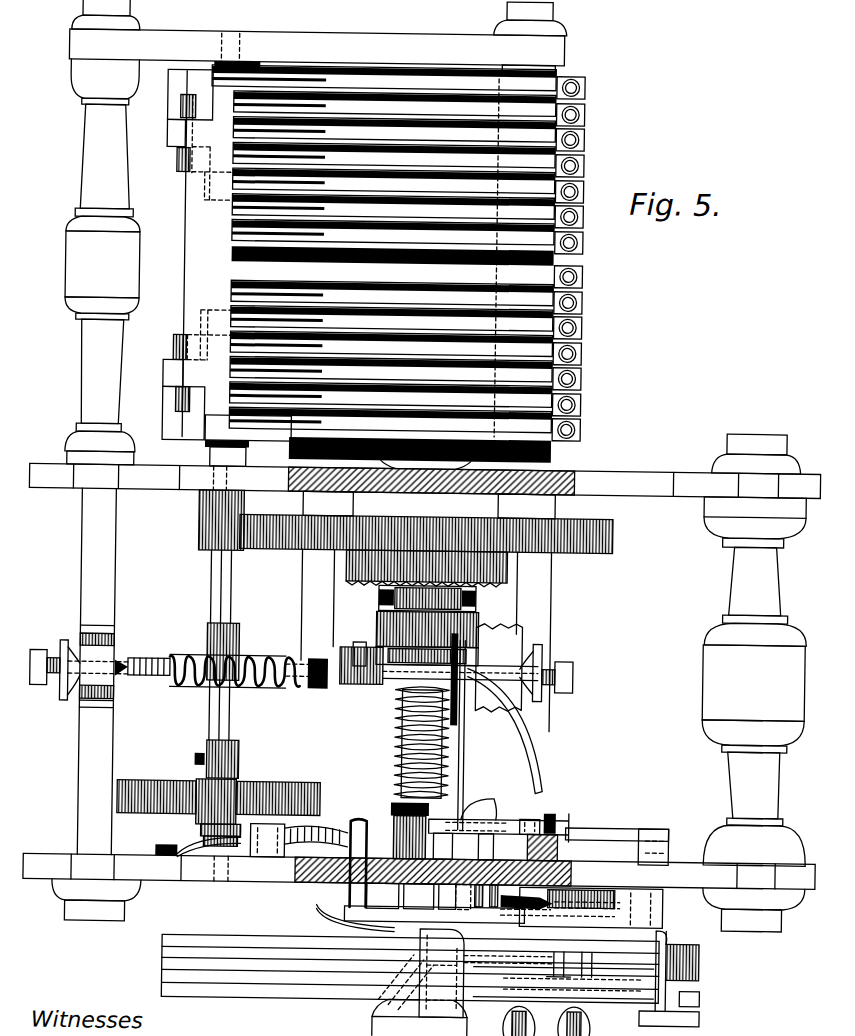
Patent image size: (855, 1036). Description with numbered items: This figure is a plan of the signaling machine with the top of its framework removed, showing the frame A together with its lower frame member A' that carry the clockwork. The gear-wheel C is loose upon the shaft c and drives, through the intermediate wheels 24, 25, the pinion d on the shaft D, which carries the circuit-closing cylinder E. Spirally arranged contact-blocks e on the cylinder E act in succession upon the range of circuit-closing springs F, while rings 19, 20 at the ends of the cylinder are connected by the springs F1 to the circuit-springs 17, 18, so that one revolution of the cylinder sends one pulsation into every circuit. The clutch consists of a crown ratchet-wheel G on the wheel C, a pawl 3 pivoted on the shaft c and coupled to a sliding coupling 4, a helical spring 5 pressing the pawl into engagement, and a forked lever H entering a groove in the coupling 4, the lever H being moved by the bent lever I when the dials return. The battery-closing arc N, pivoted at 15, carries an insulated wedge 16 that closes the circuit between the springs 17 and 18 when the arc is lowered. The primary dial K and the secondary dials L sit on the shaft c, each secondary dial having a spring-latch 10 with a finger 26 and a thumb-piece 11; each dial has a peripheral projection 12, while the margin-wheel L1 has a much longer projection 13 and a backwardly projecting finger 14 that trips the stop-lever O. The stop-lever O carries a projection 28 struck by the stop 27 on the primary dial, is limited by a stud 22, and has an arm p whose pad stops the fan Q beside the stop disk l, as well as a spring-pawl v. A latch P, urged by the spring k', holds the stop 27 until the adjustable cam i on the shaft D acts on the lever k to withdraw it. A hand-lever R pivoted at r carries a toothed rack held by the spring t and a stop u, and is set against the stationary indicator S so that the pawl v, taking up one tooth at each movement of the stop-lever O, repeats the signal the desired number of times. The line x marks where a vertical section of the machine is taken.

The frame A is at (424, 472).
The lower frame plate A' is at (419, 884).
The circuit-closing cylinder E is at (208, 254).
The contact-blocks e is at (172, 253).
The ring 19 is at (190, 108).
The ring 20 is at (227, 413).
The circuit-closing springs F is at (381, 251).
The springs F1 is at (422, 273).
The gear-wheel C is at (441, 534).
The crown ratchet-wheel G is at (508, 569).
The pawl 3 is at (470, 608).
The shaft c is at (398, 590).
The sliding coupling 4 is at (481, 642).
The forked lever H is at (360, 643).
The fan Q is at (370, 680).
The intermediate wheel 24 is at (201, 553).
The shaft D is at (220, 698).
The pinion d is at (240, 776).
The intermediate wheel 25 is at (303, 788).
The adjustable cam i is at (200, 847).
The spring k' is at (158, 837).
The lever k is at (308, 853).
The helical spring 5 is at (410, 733).
The disk l is at (462, 718).
The arm p is at (470, 785).
The stop u is at (545, 768).
The spring-pawl v is at (395, 824).
The bent lever I is at (482, 810).
The hand-lever R is at (563, 848).
The indicator S is at (551, 812).
The spring t is at (611, 830).
The pivot r is at (566, 873).
The circuit-closing spring 18 is at (599, 881).
The battery-closing arc N is at (383, 895).
The stud 22 is at (419, 896).
The stop-lever O is at (455, 896).
The insulated wedge 16 is at (552, 912).
The circuit-closing spring 17 is at (520, 915).
The pivot 15 is at (591, 907).
The latch P is at (332, 910).
The primary dial K is at (230, 940).
The secondary dials L is at (168, 956).
The margin-wheel L1 is at (258, 1000).
The projection 12 is at (385, 990).
The stop 27 is at (385, 945).
The projection 28 is at (509, 965).
The finger 26 is at (585, 958).
The spring-latch 10 is at (650, 1003).
The thumb-piece 11 is at (547, 1021).
The finger 14 is at (672, 945).
The section line x is at (668, 920).
The projection 13 is at (702, 990).